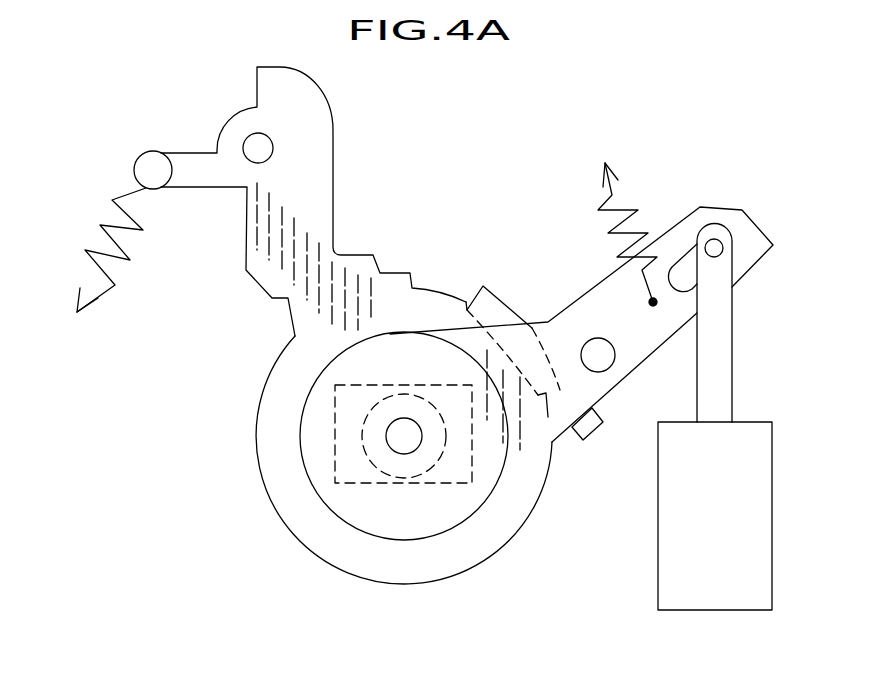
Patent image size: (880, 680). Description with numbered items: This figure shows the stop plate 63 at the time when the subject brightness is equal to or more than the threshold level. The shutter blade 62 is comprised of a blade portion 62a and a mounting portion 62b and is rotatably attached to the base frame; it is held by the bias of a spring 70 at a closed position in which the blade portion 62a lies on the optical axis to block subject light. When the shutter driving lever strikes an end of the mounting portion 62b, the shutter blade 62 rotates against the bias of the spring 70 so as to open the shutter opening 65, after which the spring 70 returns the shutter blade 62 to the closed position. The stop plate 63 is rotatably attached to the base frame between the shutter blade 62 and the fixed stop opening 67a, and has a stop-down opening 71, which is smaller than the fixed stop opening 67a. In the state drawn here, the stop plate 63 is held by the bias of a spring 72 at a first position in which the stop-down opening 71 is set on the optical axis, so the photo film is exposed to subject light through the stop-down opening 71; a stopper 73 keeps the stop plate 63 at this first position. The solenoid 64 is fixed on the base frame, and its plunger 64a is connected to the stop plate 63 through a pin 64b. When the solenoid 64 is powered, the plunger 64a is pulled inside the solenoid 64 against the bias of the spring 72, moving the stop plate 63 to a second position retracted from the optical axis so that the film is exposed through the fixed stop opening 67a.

The shutter blade 62 is at (246, 291).
The blade portion 62a is at (288, 485).
The mounting portion 62b is at (307, 150).
The stop plate 63 is at (367, 513).
The solenoid 64 is at (742, 540).
The plunger 64a is at (713, 370).
The pin 64b is at (716, 240).
The shutter opening 65 is at (335, 432).
The fixed stop opening 67a is at (410, 397).
The spring 70 is at (102, 228).
The stop-down opening 71 is at (403, 455).
The spring 72 is at (633, 207).
The stopper 73 is at (585, 445).